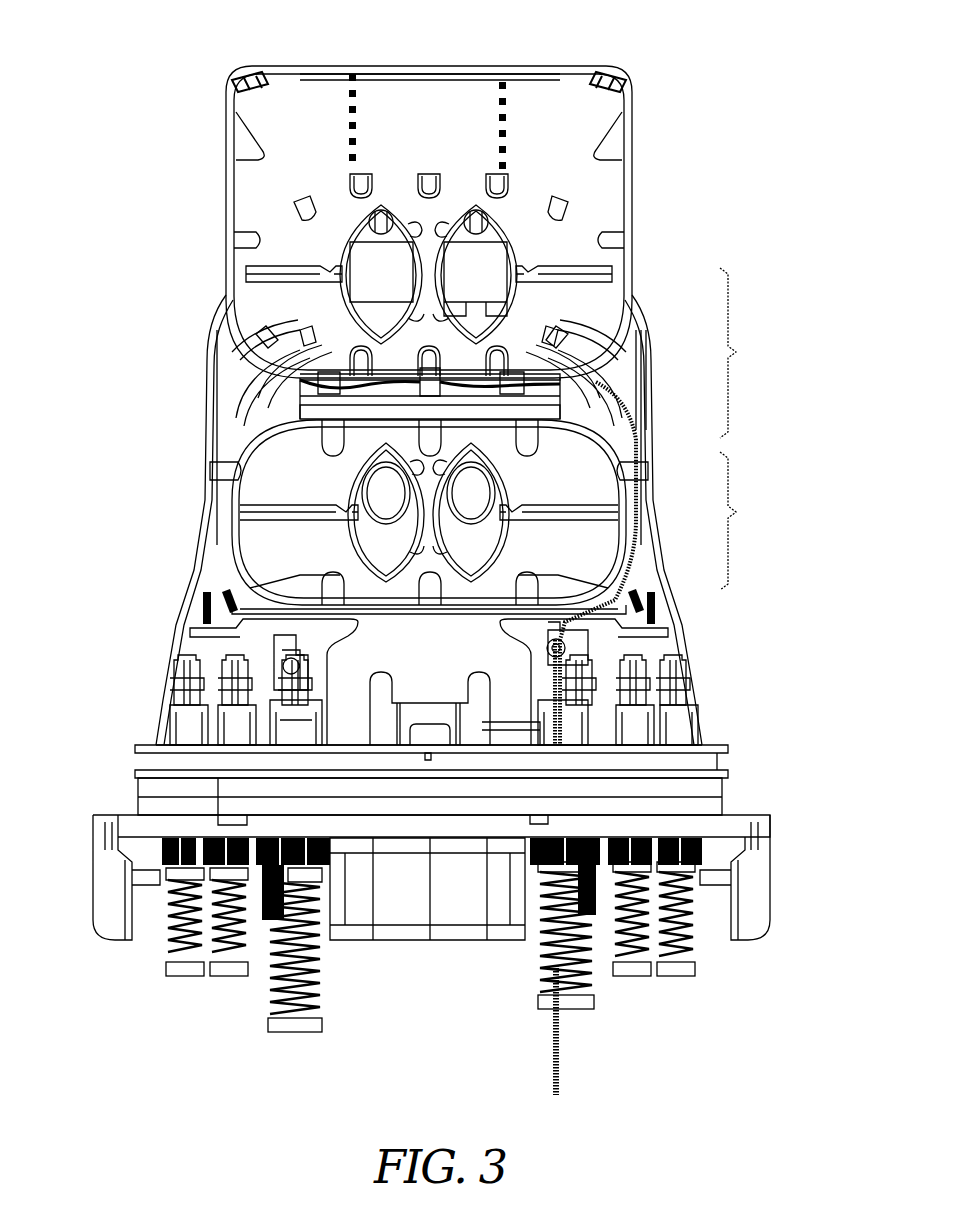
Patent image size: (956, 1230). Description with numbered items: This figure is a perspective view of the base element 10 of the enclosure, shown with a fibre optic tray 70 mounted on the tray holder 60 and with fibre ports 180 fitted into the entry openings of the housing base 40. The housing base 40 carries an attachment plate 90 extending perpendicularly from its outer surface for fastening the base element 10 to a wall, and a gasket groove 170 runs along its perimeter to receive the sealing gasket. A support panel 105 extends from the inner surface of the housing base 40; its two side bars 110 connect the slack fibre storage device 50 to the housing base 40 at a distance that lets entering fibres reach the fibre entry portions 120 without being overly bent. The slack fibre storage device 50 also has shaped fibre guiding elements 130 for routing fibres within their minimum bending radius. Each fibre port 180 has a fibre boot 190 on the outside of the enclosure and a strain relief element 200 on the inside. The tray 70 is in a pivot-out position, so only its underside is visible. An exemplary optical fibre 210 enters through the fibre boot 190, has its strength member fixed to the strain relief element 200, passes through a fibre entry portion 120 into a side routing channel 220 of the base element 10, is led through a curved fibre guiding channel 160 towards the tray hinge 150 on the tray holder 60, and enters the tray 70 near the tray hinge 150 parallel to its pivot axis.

The base element 10 is at (754, 140).
The housing base 40 is at (692, 784).
The slack fibre storage device 50 is at (743, 521).
The tray holder 60 is at (743, 353).
The fibre optic tray 70 is at (385, 95).
The attachment plate 90 is at (455, 918).
The support panel 105 is at (630, 302).
The side bars 110 is at (670, 640).
The fibre entry portions 120 is at (236, 522).
The fibre guiding elements 130 is at (471, 572).
The tray hinge 150 is at (300, 414).
The fibre guiding channels 160 is at (246, 384).
The gasket groove 170 is at (165, 766).
The fibre ports 180 is at (290, 736).
The fibre boot 190 is at (290, 975).
The strain relief element 200 is at (286, 680).
The optical fibre 210 is at (650, 608).
The side routing channel 220 is at (652, 412).